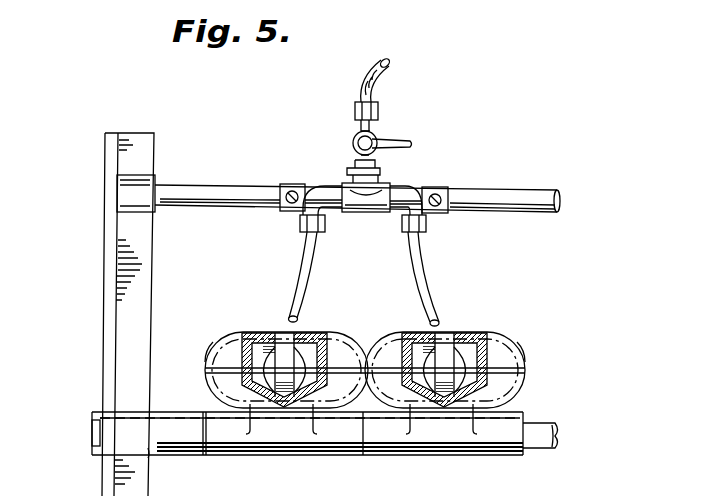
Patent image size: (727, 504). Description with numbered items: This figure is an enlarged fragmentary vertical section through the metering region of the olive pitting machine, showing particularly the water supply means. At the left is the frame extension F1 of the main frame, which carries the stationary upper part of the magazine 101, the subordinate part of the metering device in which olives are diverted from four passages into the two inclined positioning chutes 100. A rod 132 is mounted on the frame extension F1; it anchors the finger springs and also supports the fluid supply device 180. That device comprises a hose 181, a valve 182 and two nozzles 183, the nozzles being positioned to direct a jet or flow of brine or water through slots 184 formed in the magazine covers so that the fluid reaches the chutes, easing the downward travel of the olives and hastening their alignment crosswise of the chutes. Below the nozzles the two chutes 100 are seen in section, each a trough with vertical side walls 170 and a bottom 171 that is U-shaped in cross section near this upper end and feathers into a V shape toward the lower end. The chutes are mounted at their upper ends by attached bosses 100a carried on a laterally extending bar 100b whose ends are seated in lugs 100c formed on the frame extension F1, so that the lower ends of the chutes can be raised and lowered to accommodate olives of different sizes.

The frame extension F1 is at (122, 273).
The rod 132 is at (243, 186).
The fluid supply device 180 is at (387, 111).
The hose 181 is at (388, 75).
The valve 182 is at (353, 144).
The nozzles 183 is at (311, 266).
The slots 184 is at (284, 325).
The positioning chutes 100 is at (239, 342).
The bosses 100a is at (498, 443).
The laterally extending bar 100b is at (552, 428).
The lugs 100c is at (146, 453).
The magazine 101 is at (193, 359).
The vertical side walls 170 is at (240, 377).
The bottom 171 is at (287, 407).